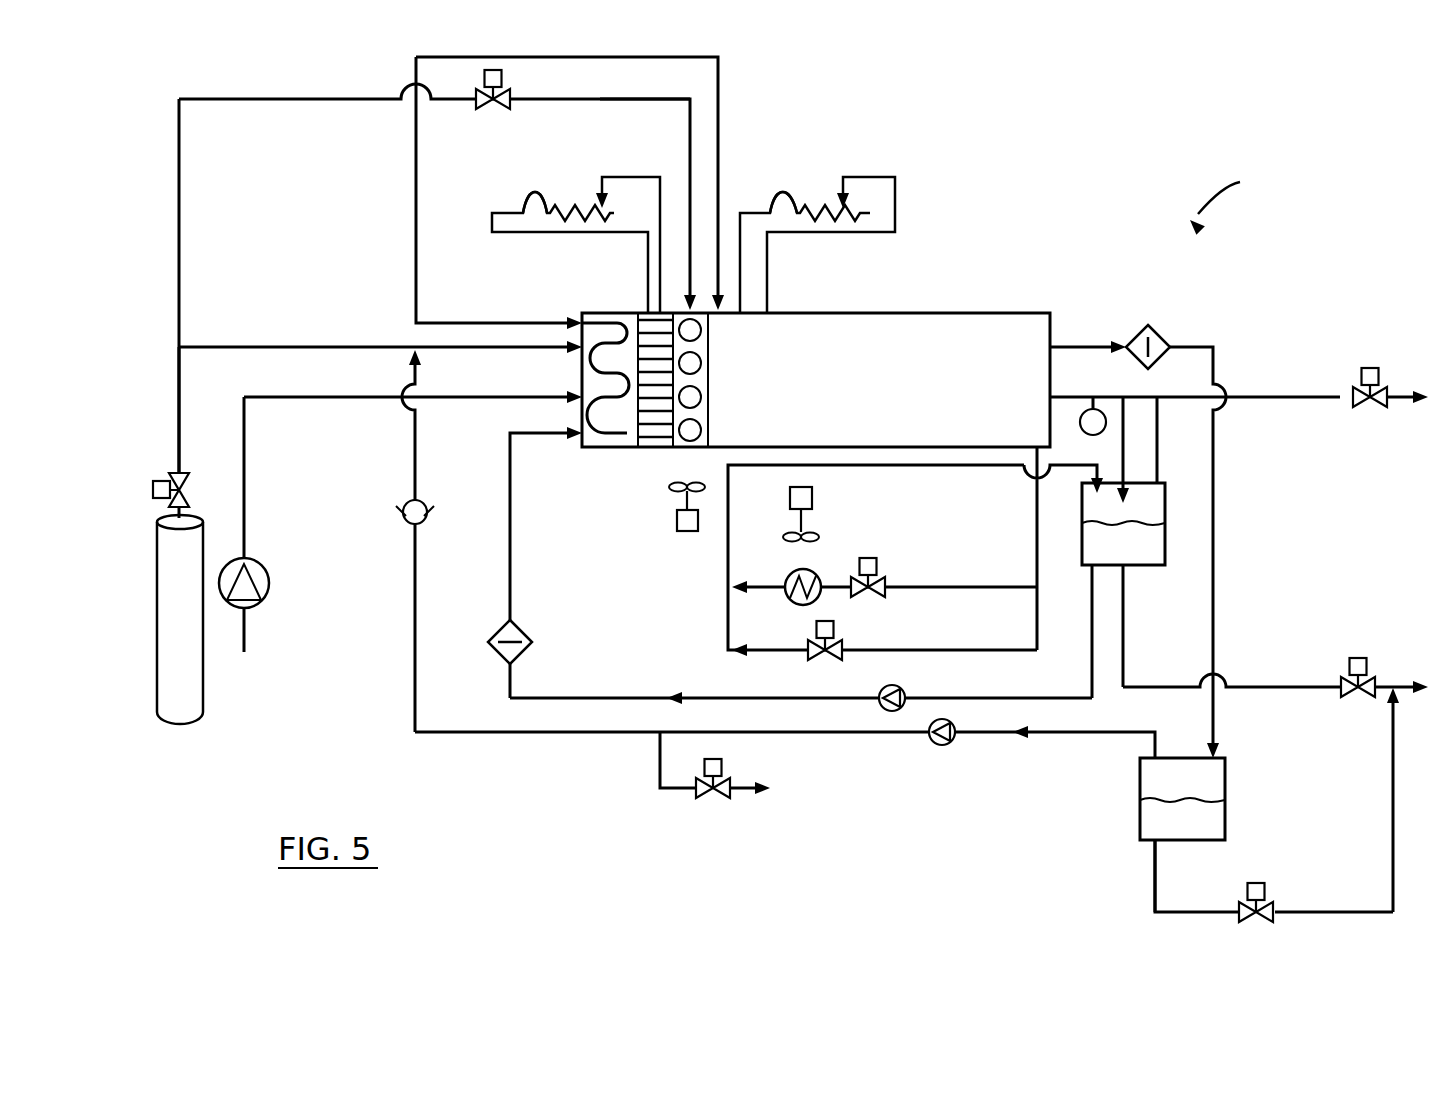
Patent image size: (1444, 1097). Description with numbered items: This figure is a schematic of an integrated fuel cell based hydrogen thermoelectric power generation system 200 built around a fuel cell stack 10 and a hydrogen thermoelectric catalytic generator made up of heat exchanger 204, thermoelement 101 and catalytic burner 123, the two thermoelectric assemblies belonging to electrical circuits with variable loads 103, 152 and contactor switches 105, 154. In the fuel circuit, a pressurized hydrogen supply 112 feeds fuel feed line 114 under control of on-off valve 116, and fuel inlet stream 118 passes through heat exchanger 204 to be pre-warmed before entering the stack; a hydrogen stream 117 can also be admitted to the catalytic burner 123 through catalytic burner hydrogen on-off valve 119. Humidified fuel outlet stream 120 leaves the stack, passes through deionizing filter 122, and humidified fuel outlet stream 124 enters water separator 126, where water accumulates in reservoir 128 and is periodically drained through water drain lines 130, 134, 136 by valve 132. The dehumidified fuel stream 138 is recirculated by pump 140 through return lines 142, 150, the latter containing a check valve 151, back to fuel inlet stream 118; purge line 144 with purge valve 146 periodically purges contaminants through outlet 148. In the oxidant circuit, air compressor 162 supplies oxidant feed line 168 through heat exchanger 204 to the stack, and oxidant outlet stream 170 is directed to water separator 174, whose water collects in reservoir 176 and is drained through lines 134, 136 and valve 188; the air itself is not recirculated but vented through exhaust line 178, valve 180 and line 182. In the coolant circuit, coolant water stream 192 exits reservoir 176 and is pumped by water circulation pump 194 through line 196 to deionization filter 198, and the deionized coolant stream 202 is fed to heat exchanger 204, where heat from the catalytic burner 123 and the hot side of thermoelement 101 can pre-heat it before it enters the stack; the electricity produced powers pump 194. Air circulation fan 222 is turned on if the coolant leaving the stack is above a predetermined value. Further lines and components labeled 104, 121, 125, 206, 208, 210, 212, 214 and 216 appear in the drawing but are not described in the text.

The fuel cell stack 10 is at (861, 313).
The thermoelement 101 is at (660, 448).
The variable load 103 is at (600, 207).
The coolant outlet line 104 is at (1033, 500).
The contactor switch 105 is at (527, 210).
The hydrogen supply 112 is at (168, 562).
The fuel feed line 114 is at (177, 378).
The on-off valve 116 is at (153, 490).
The hydrogen stream 117 is at (179, 238).
The fuel inlet stream 118 is at (385, 345).
The catalytic burner hydrogen on-off valve 119 is at (502, 79).
The humidified fuel outlet stream 120 is at (1088, 345).
The water line 121 is at (668, 104).
The deionizing filter 122 is at (1163, 325).
The catalytic burner 123 is at (688, 450).
The humidified fuel outlet stream 124 is at (1218, 630).
The fan 125 is at (677, 522).
The water separator 126 is at (1205, 778).
The reservoir 128 is at (1208, 820).
The water drain line 130 is at (1155, 868).
The valve 132 is at (1260, 883).
The water drain line 134 is at (1185, 690).
The water drain line 136 is at (1405, 685).
The dehumidified fuel stream 138 is at (1093, 734).
The pump 140 is at (940, 746).
The return line 142 is at (800, 733).
The purge line 144 is at (660, 762).
The purge valve 146 is at (713, 798).
The purge outlet 148 is at (777, 787).
The return line 150 is at (415, 692).
The check valve 151 is at (406, 503).
The variable load 152 is at (817, 210).
The contactor switch 154 is at (773, 207).
The air compressor 162 is at (260, 566).
The oxidant feed line 168 is at (347, 400).
The oxidant outlet stream 170 is at (1097, 397).
The water separator 174 is at (1183, 508).
The reservoir 176 is at (1140, 565).
The exhaust line 178 is at (1160, 410).
The valve 180 is at (1370, 377).
The line 182 is at (1396, 395).
The valve 188 is at (1360, 668).
The coolant water stream 192 is at (1093, 590).
The water circulation pump 194 is at (900, 687).
The line 196 is at (578, 698).
The deionization filter 198 is at (524, 632).
The integrated fuel cell based hydrogen thermoelectric power generation system 200 is at (1242, 201).
The deionized coolant stream 202 is at (532, 434).
The heat exchanger 204 is at (580, 368).
The water supply line 206 is at (416, 214).
The coolant line 208 is at (970, 587).
The valve 210 is at (866, 558).
The bypass valve 212 is at (835, 628).
The heat exchanger 214 is at (785, 598).
The radiator housing 216 is at (728, 568).
The air circulation fan 222 is at (812, 494).